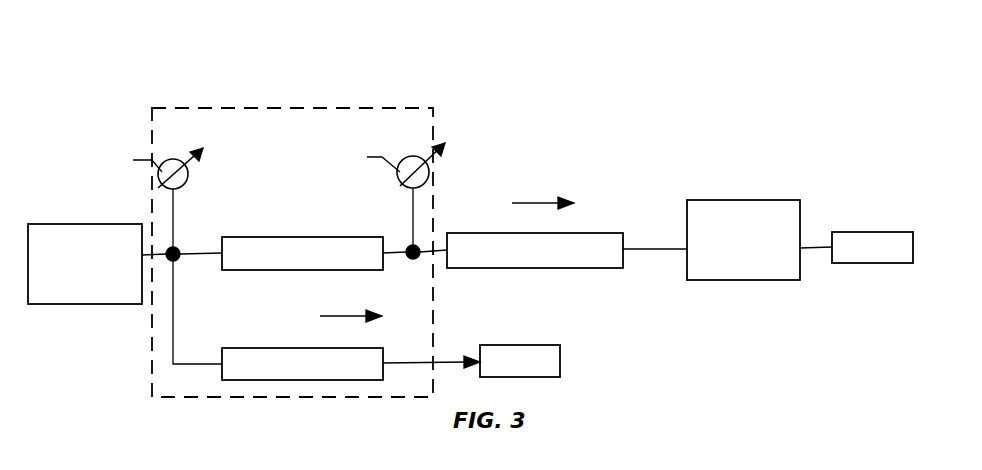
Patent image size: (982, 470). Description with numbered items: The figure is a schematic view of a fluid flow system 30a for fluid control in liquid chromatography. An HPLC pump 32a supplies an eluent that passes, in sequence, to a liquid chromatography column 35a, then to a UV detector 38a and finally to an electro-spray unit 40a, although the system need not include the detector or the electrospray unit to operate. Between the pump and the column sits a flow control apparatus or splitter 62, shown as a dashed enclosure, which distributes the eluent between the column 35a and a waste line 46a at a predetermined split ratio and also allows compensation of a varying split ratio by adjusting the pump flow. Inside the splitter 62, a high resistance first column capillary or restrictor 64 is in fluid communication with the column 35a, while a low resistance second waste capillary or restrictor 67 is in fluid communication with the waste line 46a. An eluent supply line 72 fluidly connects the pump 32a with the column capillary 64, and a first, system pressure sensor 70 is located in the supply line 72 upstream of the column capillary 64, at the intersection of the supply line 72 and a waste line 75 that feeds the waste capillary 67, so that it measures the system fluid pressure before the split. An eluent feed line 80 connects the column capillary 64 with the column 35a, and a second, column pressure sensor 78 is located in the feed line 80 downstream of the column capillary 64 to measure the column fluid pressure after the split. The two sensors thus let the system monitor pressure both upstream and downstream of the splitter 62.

The fluid flow system 30a is at (569, 81).
The HPLC pump 32a is at (118, 237).
The liquid chromatography column 35a is at (596, 248).
The UV detector 38a is at (774, 218).
The electro-spray unit 40a is at (889, 240).
The waste line 46a is at (546, 352).
The splitter 62 is at (361, 99).
The column capillary 64 is at (317, 240).
The waste capillary 67 is at (343, 360).
The system pressure sensor 70 is at (172, 158).
The eluent supply line 72 is at (200, 248).
The waste line 75 is at (175, 307).
The column pressure sensor 78 is at (412, 157).
The eluent feed line 80 is at (394, 246).